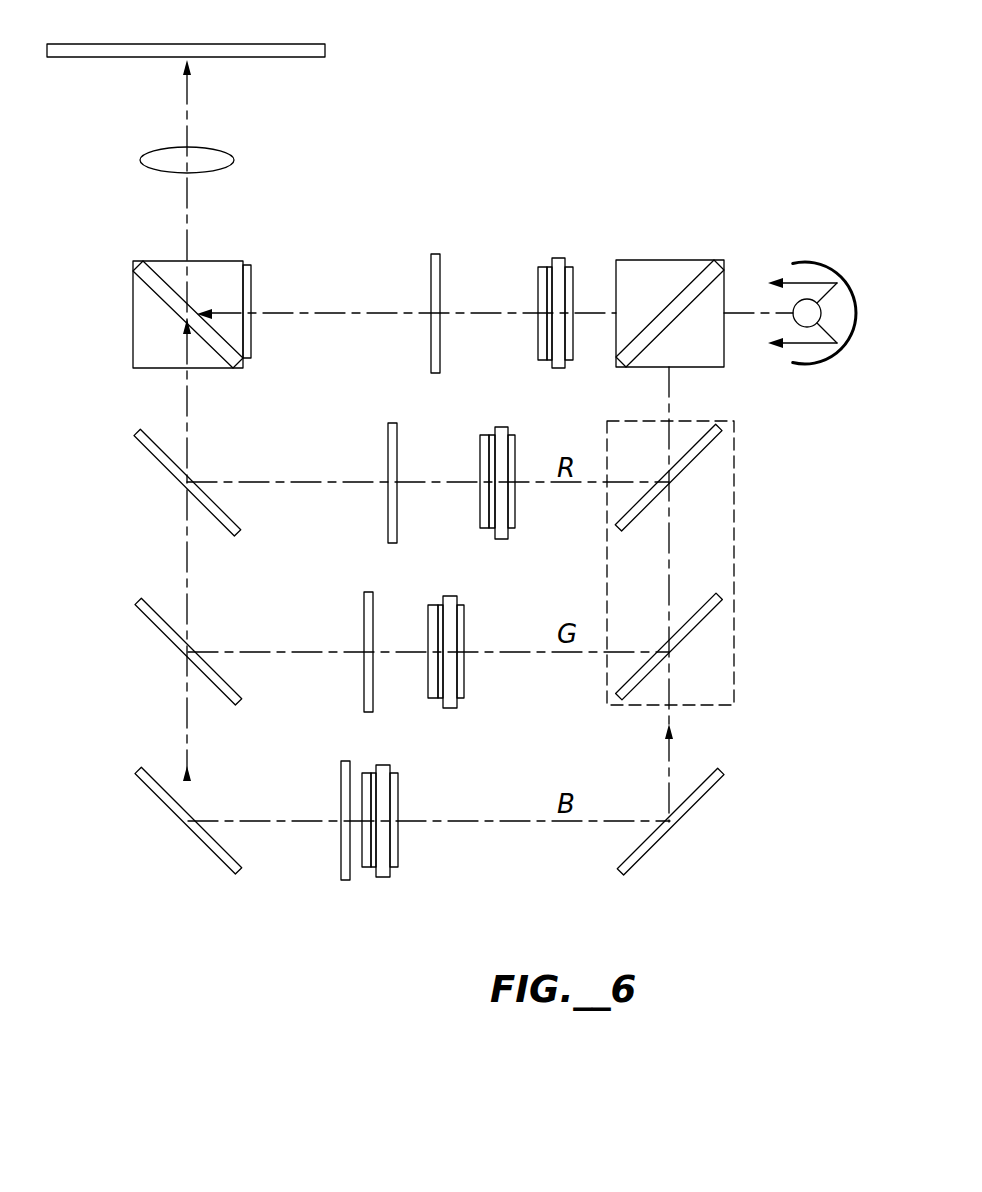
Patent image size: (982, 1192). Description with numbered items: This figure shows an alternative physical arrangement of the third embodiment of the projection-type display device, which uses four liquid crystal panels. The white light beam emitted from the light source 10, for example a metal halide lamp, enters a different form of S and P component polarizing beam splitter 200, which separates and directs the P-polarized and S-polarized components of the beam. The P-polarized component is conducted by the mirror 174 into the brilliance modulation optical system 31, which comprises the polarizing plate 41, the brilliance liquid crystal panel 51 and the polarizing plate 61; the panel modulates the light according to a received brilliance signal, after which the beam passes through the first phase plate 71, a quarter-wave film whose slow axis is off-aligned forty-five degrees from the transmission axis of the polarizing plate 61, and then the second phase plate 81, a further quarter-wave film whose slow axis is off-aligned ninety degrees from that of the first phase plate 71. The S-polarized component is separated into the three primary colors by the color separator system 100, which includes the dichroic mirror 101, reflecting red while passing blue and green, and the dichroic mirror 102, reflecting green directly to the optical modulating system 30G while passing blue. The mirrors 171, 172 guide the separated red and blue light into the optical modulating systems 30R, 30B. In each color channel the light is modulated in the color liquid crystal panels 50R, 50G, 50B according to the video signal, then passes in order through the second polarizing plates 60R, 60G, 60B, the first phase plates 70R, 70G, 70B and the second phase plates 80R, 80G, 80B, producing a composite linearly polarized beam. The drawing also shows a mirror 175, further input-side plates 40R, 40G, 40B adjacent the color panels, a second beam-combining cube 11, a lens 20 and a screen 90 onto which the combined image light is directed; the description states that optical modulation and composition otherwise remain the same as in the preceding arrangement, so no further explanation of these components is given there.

The light source 10 is at (822, 265).
The polarizing beam splitter 11 is at (147, 284).
The projection lens 20 is at (222, 171).
The screen 90 is at (253, 44).
The polarizing beam splitter 200 is at (685, 260).
The second phase plate 81 is at (431, 275).
The first phase plate 71 is at (538, 270).
The polarizing plate 61 is at (549, 267).
The brilliance liquid crystal panel 51 is at (558, 258).
The polarizing plate 41 is at (569, 267).
The brilliance modulation optical system 31 is at (538, 372).
The color separator system 100 is at (734, 525).
The dichroic mirror 101 is at (705, 445).
The dichroic mirror 102 is at (706, 617).
The mirror 171 is at (662, 848).
The mirror 172 is at (150, 797).
The mirror 174 is at (150, 458).
The dichroic mirror 175 is at (150, 625).
The second phase plate 80R is at (388, 455).
The first phase plate 70R is at (480, 450).
The second polarizing plate 60R is at (491, 435).
The color liquid crystal panel 50R is at (500, 427).
The reflective panel for red 40R is at (515, 447).
The optical modulating system 30R is at (480, 542).
The second phase plate 80G is at (364, 625).
The first phase plate 70G is at (428, 635).
The second polarizing plate 60G is at (440, 605).
The color liquid crystal panel 50G is at (450, 596).
The reflective panel for green 40G is at (464, 618).
The optical modulating system 30G is at (428, 710).
The second phase plate 80B is at (341, 798).
The first phase plate 70B is at (366, 773).
The second polarizing plate 60B is at (374, 773).
The color liquid crystal panel 50B is at (392, 778).
The reflective panel for blue 40B is at (398, 808).
The optical modulating system 30B is at (362, 882).